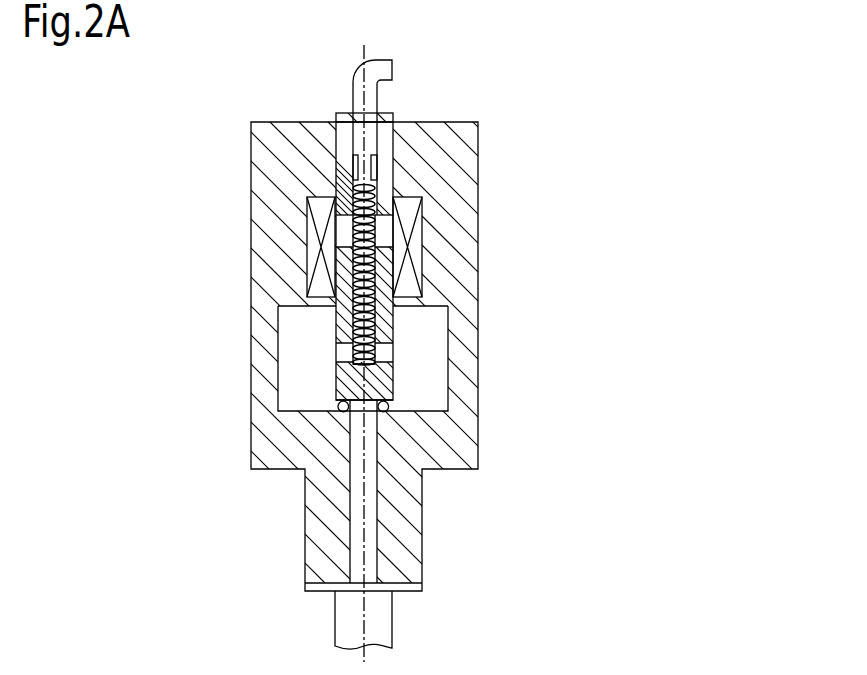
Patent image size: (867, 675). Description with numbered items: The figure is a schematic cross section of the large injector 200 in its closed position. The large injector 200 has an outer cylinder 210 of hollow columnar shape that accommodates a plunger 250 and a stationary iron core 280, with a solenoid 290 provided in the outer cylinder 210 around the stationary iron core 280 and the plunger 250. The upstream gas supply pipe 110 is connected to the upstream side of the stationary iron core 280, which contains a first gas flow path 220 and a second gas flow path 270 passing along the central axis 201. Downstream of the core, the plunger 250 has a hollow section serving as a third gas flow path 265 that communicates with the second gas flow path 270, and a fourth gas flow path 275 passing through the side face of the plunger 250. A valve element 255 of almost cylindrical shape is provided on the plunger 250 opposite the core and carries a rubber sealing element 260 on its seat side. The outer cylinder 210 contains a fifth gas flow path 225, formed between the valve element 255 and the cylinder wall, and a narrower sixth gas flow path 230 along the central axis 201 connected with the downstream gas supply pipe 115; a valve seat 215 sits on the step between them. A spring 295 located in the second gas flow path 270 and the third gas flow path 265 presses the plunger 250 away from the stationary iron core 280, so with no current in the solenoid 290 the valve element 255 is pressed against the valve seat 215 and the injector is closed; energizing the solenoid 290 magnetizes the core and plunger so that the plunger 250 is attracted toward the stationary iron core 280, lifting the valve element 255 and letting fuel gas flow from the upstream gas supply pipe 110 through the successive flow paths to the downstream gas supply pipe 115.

The large injector 200 is at (210, 98).
The upstream gas supply pipe 110 is at (377, 96).
The first gas flow path 220 is at (370, 133).
The stationary iron core 280 is at (354, 157).
The outer cylinder 210 is at (478, 167).
The second gas flow path 270 is at (422, 200).
The spring 295 is at (377, 230).
The solenoid 290 is at (422, 277).
The third gas flow path 265 is at (393, 315).
The plunger 250 is at (333, 322).
The fifth gas flow path 225 is at (288, 360).
The fourth gas flow path 275 is at (380, 351).
The valve element 255 is at (393, 383).
The rubber sealing element 260 is at (388, 407).
The valve seat 215 is at (297, 414).
The sixth gas flow path 230 is at (368, 527).
The central axis 201 is at (367, 600).
The downstream gas supply pipe 115 is at (392, 628).